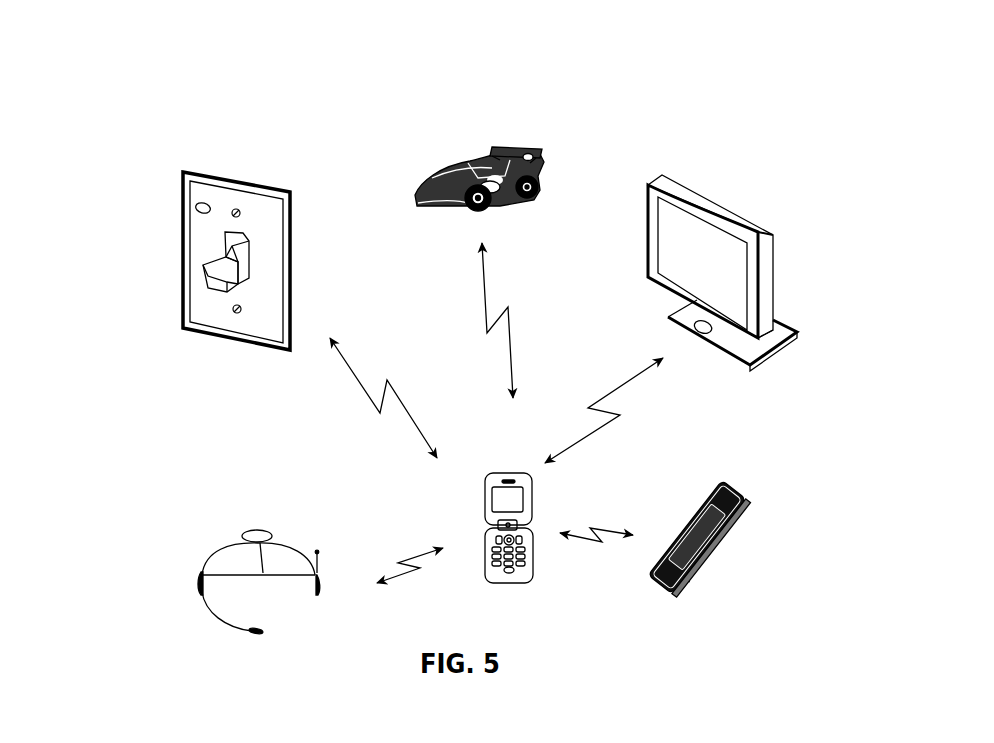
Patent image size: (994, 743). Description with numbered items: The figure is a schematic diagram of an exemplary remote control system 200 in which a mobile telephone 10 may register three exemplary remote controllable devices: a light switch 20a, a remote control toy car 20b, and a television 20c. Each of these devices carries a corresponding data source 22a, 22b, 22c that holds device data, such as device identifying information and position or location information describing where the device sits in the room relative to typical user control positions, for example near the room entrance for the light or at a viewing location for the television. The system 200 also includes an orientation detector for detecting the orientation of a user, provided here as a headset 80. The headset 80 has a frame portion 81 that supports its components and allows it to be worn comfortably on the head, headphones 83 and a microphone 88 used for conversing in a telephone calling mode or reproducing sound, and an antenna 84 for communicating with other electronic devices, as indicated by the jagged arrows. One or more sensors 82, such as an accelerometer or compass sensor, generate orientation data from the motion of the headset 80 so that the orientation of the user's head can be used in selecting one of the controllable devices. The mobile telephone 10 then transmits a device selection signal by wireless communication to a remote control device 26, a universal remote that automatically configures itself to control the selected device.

The remote control system 200 is at (302, 118).
The light switch 20a is at (183, 197).
The data source 22a is at (203, 212).
The remote control toy car 20b is at (425, 180).
The data source 22b is at (528, 153).
The television 20c is at (750, 367).
The data source 22c is at (685, 326).
The mobile telephone 10 is at (532, 555).
The remote control device 26 is at (710, 548).
The headset 80 is at (245, 566).
The frame portion 81 is at (278, 562).
The sensor 82 is at (255, 540).
The headphones 83 is at (198, 583).
The antenna 84 is at (320, 558).
The microphone 88 is at (262, 632).